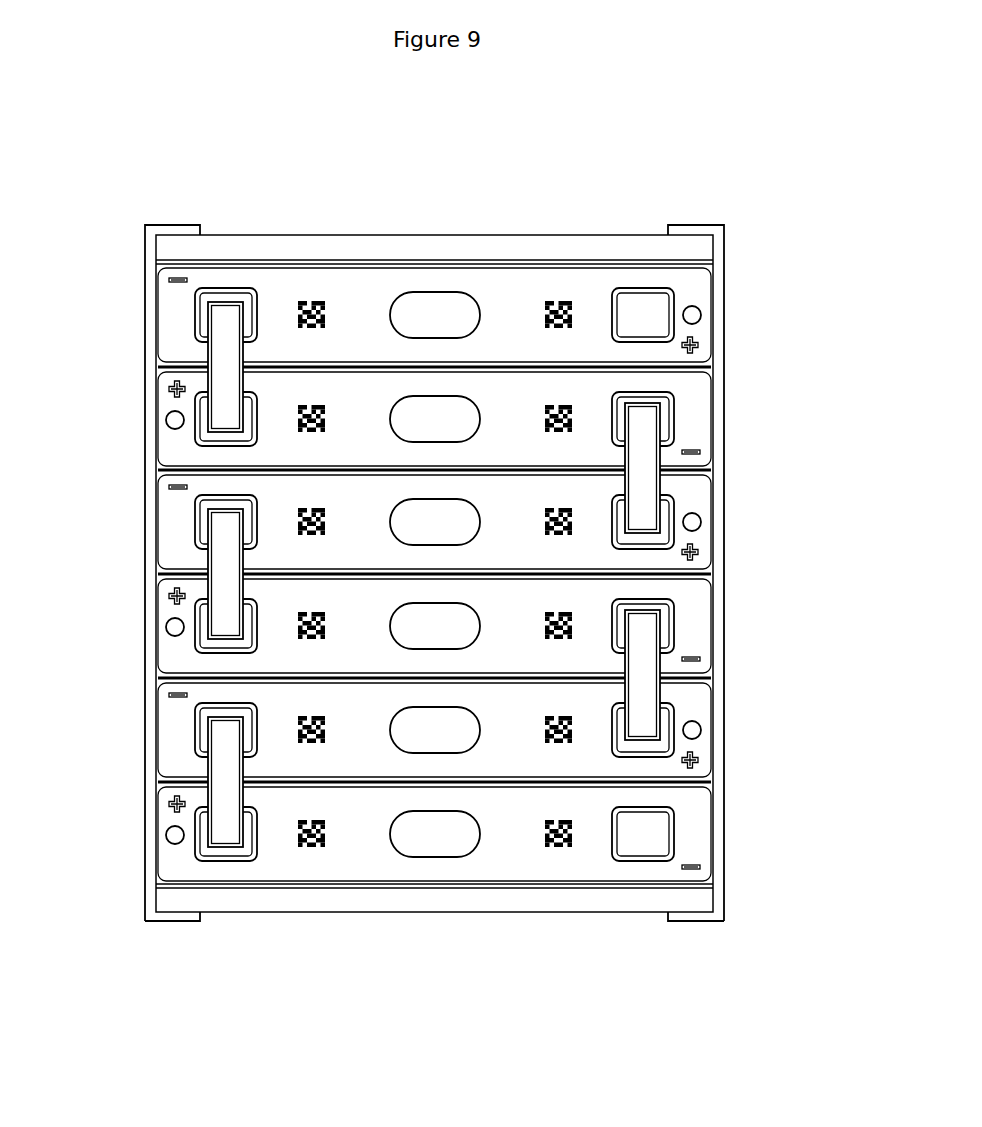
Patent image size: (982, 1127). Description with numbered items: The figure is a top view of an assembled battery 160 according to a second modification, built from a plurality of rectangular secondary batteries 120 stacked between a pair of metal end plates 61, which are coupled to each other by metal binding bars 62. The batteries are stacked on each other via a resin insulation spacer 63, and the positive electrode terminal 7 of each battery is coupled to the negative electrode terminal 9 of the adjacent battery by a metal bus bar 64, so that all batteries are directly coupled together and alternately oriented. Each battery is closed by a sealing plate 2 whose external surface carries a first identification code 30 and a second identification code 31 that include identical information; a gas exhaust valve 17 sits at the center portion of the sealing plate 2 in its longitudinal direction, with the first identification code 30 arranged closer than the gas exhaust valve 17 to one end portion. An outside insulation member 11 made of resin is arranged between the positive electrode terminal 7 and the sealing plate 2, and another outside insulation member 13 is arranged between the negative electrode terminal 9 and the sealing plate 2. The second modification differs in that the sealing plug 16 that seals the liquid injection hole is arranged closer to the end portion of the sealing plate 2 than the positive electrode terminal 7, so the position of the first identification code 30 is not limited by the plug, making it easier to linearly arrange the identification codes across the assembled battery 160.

The assembled battery 160 is at (117, 113).
The sealing plate 2 is at (365, 298).
The positive electrode terminal 7 is at (657, 302).
The negative electrode terminal 9 is at (205, 303).
The outside insulation member 11 is at (637, 288).
The outside insulation member 13 is at (222, 298).
The sealing plug 16 is at (700, 312).
The gas exhaust valve 17 is at (428, 316).
The first identification code 30 is at (567, 298).
The second identification code 31 is at (312, 298).
The end plate 61 is at (253, 250).
The binding bar 62 is at (717, 423).
The insulation spacer 63 is at (713, 358).
The bus bar 64 is at (225, 358).
The rectangular secondary battery 120 is at (685, 277).